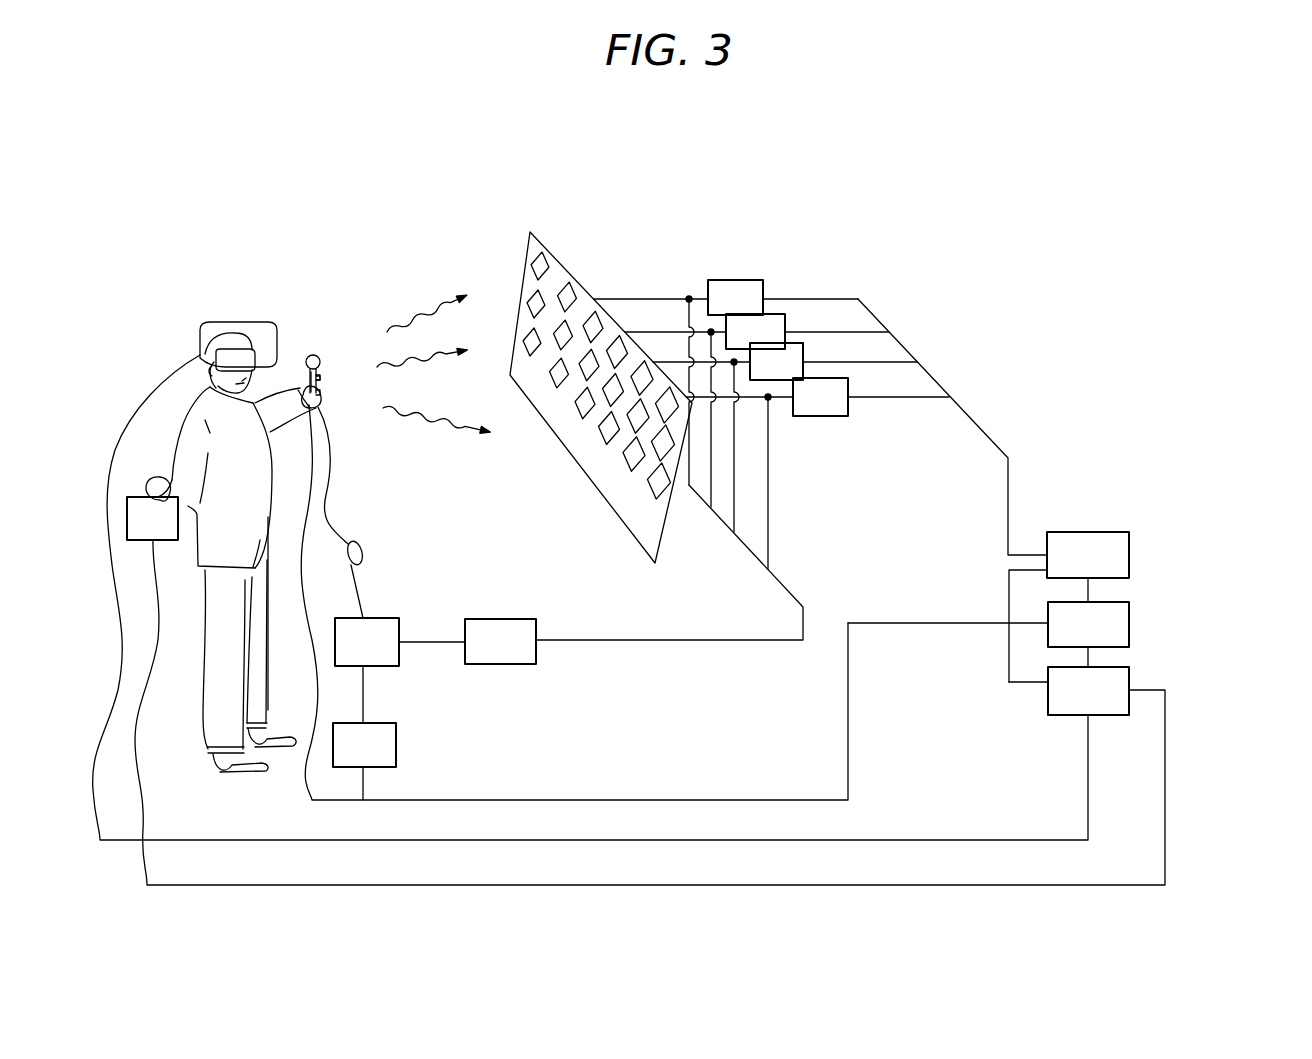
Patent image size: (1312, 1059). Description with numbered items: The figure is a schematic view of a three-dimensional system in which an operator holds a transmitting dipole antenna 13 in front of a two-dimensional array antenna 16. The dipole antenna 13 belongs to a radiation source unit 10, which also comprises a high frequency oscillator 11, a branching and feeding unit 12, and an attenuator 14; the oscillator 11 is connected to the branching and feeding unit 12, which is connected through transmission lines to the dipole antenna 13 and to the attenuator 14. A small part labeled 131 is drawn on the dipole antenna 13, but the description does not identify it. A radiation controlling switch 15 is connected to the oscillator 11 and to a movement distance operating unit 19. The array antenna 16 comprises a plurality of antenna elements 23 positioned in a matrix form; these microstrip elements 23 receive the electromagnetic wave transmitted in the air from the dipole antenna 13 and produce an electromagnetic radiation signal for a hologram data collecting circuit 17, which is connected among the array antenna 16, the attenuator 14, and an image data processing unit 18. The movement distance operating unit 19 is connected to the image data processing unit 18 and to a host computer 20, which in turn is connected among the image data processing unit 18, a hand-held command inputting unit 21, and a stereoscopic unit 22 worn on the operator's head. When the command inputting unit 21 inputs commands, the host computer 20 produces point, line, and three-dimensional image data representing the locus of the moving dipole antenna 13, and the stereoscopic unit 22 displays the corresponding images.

The radiation source unit 10 is at (365, 553).
The high frequency oscillator 11 is at (396, 731).
The branching and feeding unit 12 is at (368, 618).
The transmitting dipole antenna 13 is at (310, 352).
The antenna rod of transmitting dipole antenna 131 is at (306, 380).
The attenuator 14 is at (537, 660).
The radiation controlling switch 15 is at (322, 378).
The two-dimensional array antenna 16 is at (505, 340).
The hologram data collecting circuit 17 is at (775, 316).
The image data processing unit 18 is at (1052, 532).
The movement distance operating unit 19 is at (1130, 617).
The host computer 20 is at (1048, 703).
The command inputting unit 21 is at (127, 540).
The stereoscopic unit 22 is at (232, 322).
The antenna element 23 is at (596, 321).